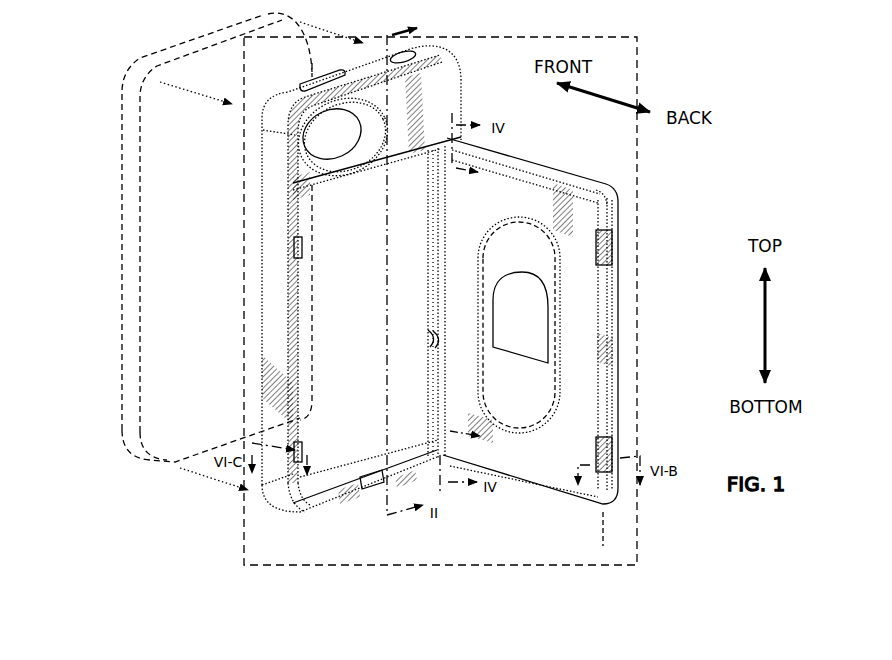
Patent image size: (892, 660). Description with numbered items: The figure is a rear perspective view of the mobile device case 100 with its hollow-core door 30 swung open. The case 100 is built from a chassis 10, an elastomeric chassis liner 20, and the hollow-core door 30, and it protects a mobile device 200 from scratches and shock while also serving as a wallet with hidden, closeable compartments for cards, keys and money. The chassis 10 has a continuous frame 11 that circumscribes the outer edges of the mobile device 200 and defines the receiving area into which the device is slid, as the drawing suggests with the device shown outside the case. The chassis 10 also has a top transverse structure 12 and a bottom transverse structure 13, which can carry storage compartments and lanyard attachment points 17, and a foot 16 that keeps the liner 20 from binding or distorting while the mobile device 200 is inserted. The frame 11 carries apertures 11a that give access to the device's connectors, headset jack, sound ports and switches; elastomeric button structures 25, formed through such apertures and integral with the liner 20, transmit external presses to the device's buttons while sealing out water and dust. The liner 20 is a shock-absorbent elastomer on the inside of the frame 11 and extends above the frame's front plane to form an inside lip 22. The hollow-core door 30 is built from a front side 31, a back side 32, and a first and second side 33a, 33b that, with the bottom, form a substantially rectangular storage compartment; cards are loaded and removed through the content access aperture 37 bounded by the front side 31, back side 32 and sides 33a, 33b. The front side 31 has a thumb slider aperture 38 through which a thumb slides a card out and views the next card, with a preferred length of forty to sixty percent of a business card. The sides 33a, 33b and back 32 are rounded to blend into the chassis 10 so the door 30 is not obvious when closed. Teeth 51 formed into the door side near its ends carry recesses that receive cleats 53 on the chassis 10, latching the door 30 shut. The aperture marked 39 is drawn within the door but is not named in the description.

The mobile device case 100 is at (88, 98).
The mobile device 200 is at (201, 136).
The chassis 10 is at (361, 279).
The continuous frame 11 is at (278, 198).
The apertures 11a is at (335, 77).
The top transverse structure 12 is at (443, 95).
The bottom transverse structure 13 is at (330, 506).
The foot 16 is at (371, 474).
The lanyard attachment points 17 is at (377, 490).
The elastomeric chassis liner 20 is at (432, 413).
The inside lip 22 is at (428, 327).
The button structures 25 is at (407, 53).
The hollow-core door 30 is at (623, 382).
The door front side 31 is at (456, 199).
The door back side 32 is at (511, 381).
The first side 33a is at (613, 286).
The second side 33b is at (441, 262).
The content access aperture 37 is at (598, 181).
The thumb slider aperture 38 is at (477, 306).
The aperture 39 is at (518, 288).
The teeth 51 is at (613, 243).
The cleat 53 is at (292, 251).